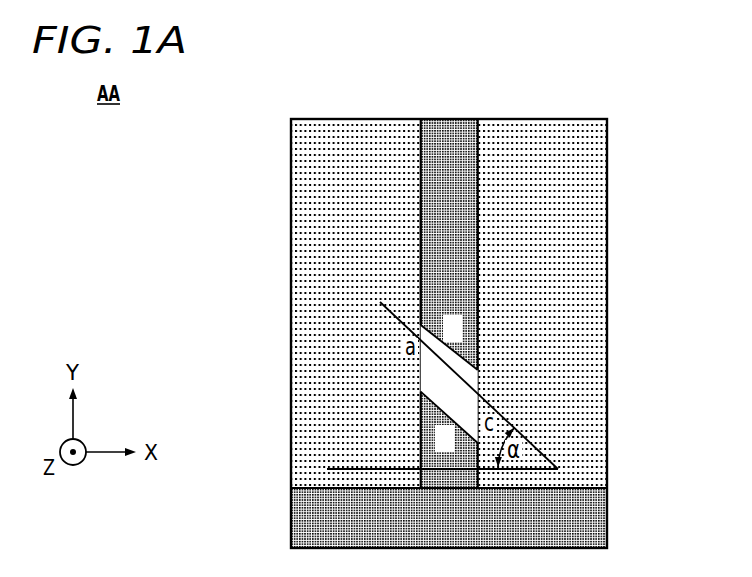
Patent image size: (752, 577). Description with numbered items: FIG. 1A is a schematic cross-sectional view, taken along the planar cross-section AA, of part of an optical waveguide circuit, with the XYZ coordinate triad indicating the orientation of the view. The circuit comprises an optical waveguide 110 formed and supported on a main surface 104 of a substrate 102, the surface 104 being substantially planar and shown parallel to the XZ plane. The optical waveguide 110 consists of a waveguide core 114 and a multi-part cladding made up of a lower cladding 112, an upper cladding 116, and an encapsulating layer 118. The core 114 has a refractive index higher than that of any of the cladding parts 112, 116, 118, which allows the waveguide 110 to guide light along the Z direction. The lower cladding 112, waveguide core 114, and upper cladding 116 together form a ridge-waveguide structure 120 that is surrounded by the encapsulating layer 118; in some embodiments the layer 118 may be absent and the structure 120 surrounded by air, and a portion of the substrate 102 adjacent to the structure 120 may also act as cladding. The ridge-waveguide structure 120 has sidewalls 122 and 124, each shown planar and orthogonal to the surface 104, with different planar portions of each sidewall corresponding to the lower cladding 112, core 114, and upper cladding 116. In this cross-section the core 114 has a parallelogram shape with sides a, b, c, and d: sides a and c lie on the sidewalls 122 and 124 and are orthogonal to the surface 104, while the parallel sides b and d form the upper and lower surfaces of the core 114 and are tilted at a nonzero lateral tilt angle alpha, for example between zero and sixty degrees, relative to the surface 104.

The substrate 102 is at (593, 522).
The main surface 104 is at (580, 480).
The optical waveguide 110 is at (642, 281).
The lower cladding 112 is at (428, 437).
The waveguide core 114 is at (428, 372).
The upper cladding 116 is at (432, 197).
The encapsulating layer 118 is at (590, 164).
The ridge-waveguide structure 120 is at (450, 84).
The sidewall 122 is at (410, 262).
The sidewall 124 is at (488, 262).